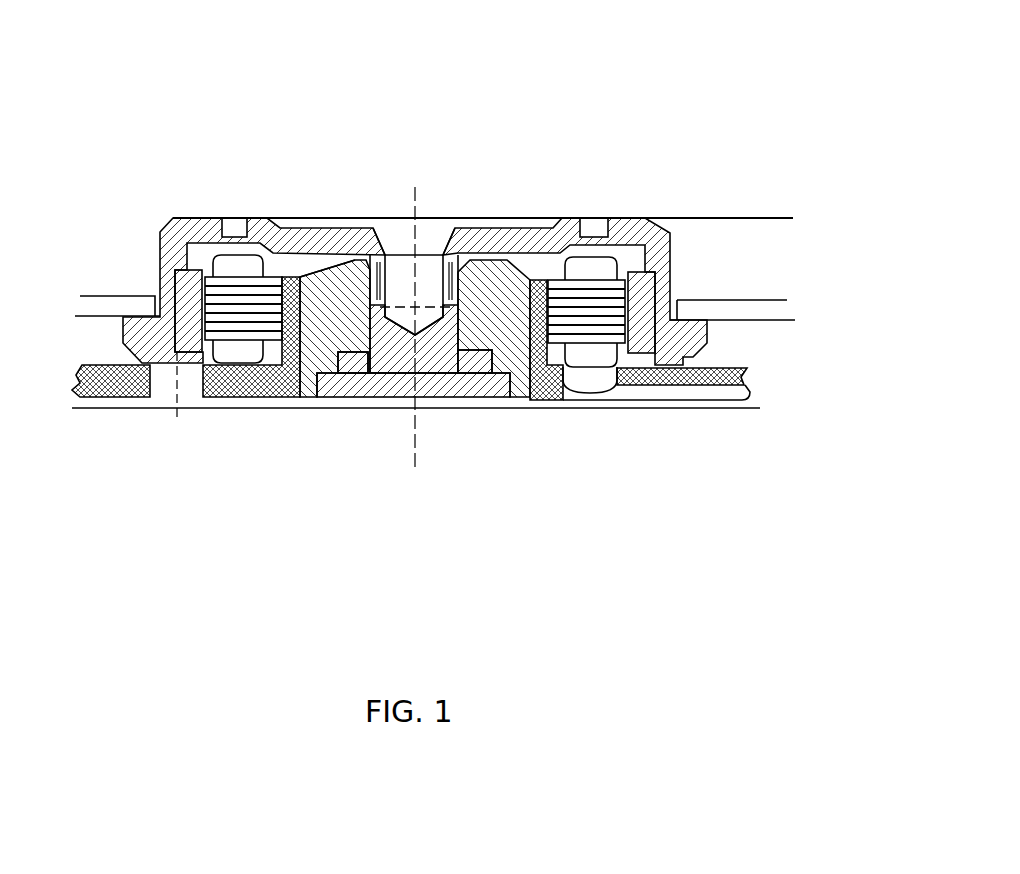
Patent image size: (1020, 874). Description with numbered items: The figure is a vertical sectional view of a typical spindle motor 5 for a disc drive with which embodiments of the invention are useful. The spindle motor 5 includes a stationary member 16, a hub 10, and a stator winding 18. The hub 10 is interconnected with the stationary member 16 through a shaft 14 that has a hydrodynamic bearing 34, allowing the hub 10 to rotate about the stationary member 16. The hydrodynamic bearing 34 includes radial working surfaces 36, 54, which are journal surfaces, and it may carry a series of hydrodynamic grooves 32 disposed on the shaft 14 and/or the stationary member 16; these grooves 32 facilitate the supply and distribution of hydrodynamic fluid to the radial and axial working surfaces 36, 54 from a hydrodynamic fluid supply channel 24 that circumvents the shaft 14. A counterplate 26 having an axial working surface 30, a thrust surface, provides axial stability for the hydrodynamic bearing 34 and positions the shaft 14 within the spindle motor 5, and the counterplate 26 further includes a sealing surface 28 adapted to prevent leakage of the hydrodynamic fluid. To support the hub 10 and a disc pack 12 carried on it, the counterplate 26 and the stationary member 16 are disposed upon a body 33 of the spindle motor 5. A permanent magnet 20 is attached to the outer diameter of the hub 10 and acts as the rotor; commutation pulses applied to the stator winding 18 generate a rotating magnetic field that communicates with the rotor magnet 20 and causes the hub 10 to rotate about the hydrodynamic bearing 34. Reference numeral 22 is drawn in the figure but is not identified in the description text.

The spindle motor 5 is at (258, 92).
The hub 10 is at (192, 232).
The disc pack 12 is at (97, 317).
The shaft 14 is at (377, 240).
The stationary member 16 is at (517, 317).
The stator winding 18 is at (240, 332).
The permanent magnet 20 is at (187, 292).
The clamp block 22 is at (362, 285).
The hydrodynamic fluid supply channel 24 is at (347, 262).
The counterplate 26 is at (458, 392).
The sealing surface 28 is at (500, 398).
The axial working surface 30 is at (358, 357).
The hydrodynamic grooves 32 is at (455, 365).
The body 33 is at (125, 392).
The hydrodynamic bearing 34 is at (413, 388).
The radial working surface 36 is at (404, 378).
The radial working surface 54 is at (460, 258).